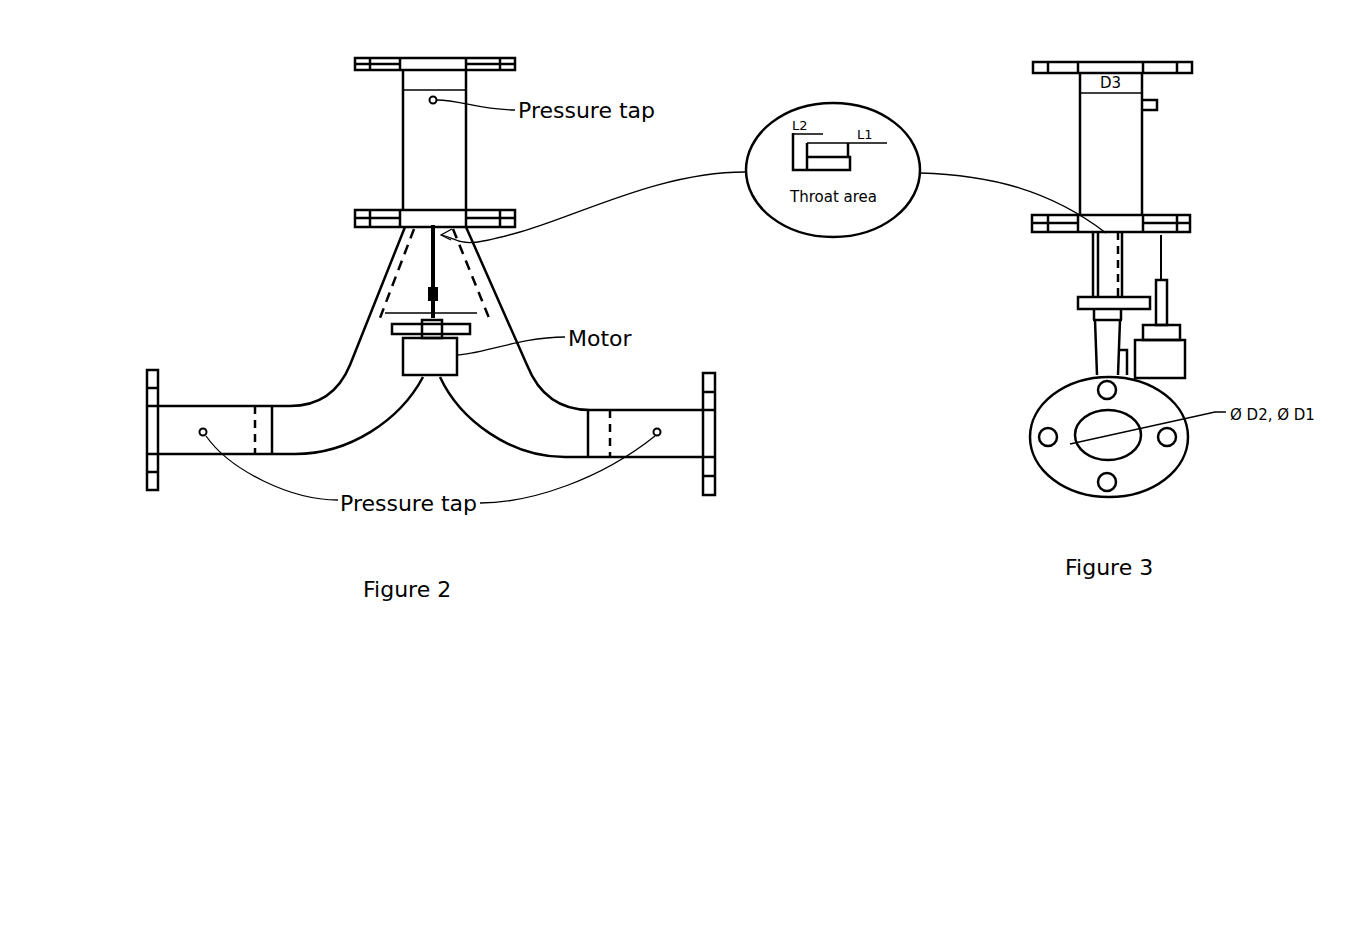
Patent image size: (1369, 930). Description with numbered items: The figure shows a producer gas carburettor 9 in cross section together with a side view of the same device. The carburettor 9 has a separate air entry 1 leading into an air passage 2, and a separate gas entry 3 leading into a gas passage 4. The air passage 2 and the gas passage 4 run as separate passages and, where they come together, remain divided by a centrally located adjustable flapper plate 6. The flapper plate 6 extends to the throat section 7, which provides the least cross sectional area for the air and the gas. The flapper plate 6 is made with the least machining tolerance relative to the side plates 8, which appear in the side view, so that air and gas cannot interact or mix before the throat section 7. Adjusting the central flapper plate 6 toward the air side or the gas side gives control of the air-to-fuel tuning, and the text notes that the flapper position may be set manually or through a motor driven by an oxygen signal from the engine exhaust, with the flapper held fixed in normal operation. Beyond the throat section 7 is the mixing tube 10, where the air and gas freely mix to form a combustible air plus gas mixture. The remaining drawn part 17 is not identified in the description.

In FIG. 2, the air entry 1 is at (686, 431).
In FIG. 2, the air passage 2 is at (415, 276).
In FIG. 2, the gas entry 3 is at (168, 432).
In FIG. 2, the gas passage 4 is at (458, 285).
In FIG. 2, the adjustable flapper plate 6 is at (430, 256).
In FIG. 2, the throat section 7 is at (432, 226).
In FIG. 3, the side plates 8 is at (1133, 243).
In FIG. 2, the carburettor 9 is at (386, 291).
In FIG. 2, the mixing tube 10 is at (423, 122).
In FIG. 2, the motor mount 17 is at (414, 360).